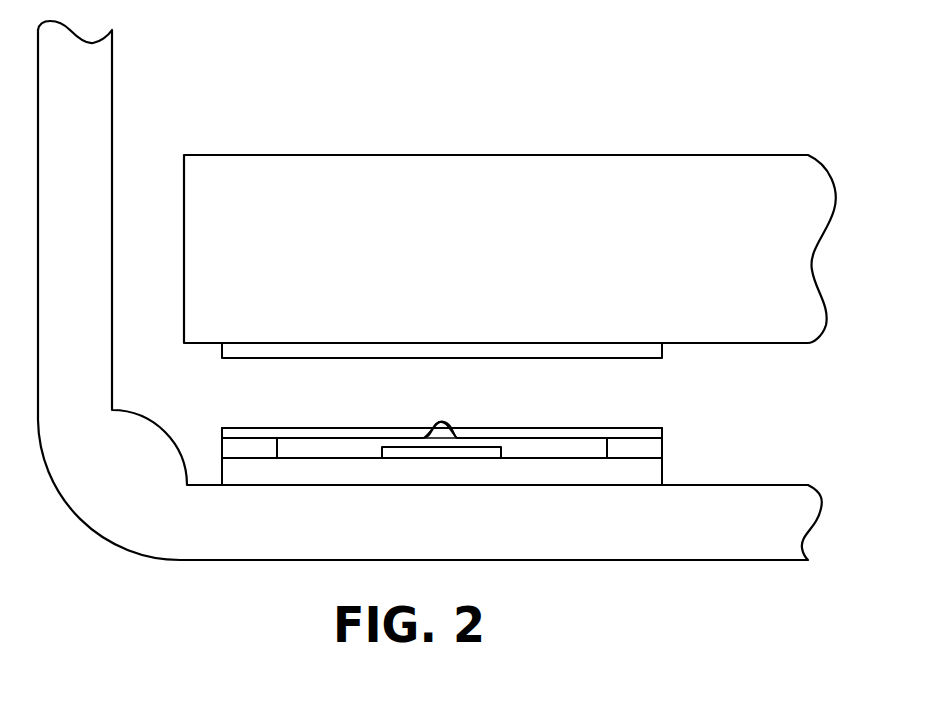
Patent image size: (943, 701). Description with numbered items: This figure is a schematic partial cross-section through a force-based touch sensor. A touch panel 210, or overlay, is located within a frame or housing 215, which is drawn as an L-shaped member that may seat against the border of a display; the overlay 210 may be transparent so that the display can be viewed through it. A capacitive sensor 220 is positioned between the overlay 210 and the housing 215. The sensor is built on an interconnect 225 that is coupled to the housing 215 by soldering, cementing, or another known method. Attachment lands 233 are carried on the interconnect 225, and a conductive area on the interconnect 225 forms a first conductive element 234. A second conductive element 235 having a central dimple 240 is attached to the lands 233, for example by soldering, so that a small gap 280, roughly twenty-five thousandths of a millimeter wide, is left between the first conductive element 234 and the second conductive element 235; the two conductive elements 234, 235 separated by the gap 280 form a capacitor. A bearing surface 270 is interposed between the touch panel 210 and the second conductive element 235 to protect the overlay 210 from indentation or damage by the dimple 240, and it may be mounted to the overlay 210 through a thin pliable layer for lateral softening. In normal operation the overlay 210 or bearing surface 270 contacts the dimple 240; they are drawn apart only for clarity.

The touch panel 210 is at (525, 267).
The housing 215 is at (93, 88).
The capacitive sensor 220 is at (502, 452).
The interconnect 225 is at (465, 477).
The attachment lands 233 is at (222, 447).
The first conductive element 234 is at (448, 450).
The second conductive element 235 is at (637, 428).
The central dimple 240 is at (450, 423).
The bearing surface 270 is at (643, 360).
The gap 280 is at (390, 445).